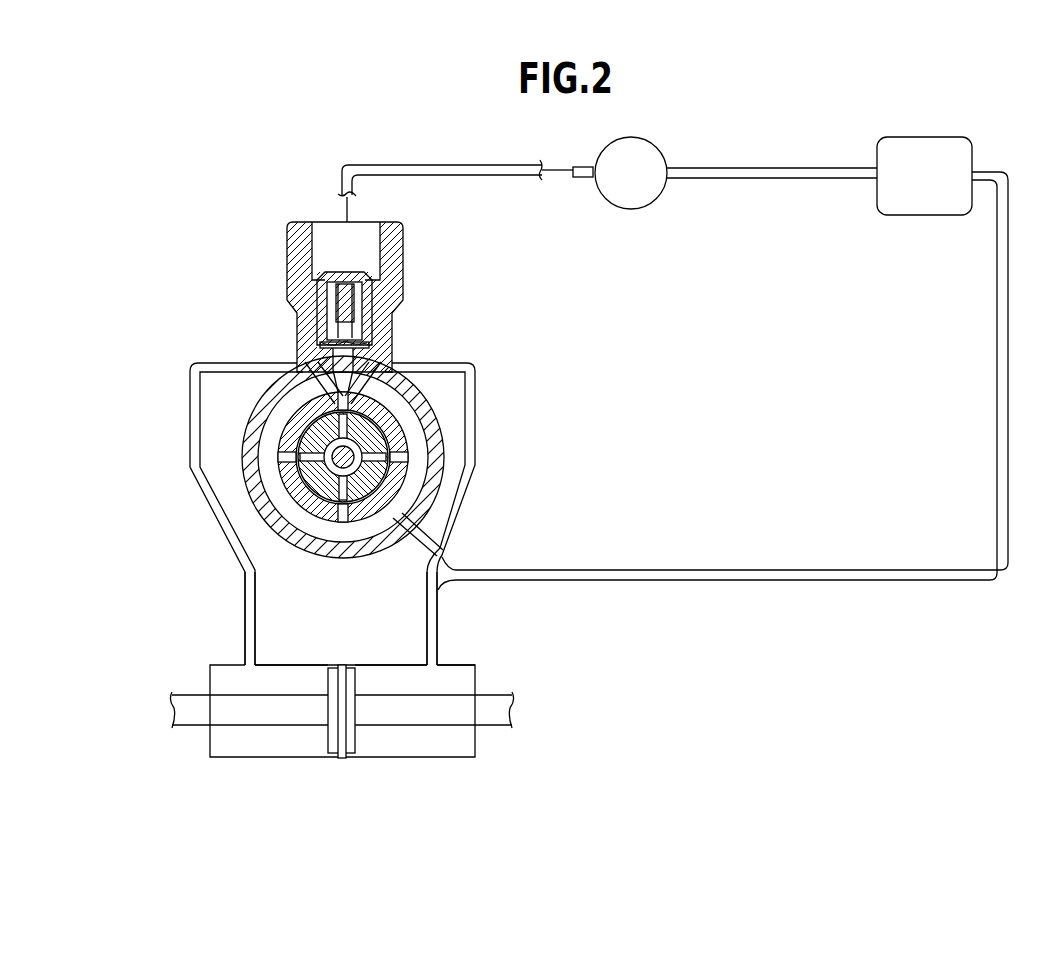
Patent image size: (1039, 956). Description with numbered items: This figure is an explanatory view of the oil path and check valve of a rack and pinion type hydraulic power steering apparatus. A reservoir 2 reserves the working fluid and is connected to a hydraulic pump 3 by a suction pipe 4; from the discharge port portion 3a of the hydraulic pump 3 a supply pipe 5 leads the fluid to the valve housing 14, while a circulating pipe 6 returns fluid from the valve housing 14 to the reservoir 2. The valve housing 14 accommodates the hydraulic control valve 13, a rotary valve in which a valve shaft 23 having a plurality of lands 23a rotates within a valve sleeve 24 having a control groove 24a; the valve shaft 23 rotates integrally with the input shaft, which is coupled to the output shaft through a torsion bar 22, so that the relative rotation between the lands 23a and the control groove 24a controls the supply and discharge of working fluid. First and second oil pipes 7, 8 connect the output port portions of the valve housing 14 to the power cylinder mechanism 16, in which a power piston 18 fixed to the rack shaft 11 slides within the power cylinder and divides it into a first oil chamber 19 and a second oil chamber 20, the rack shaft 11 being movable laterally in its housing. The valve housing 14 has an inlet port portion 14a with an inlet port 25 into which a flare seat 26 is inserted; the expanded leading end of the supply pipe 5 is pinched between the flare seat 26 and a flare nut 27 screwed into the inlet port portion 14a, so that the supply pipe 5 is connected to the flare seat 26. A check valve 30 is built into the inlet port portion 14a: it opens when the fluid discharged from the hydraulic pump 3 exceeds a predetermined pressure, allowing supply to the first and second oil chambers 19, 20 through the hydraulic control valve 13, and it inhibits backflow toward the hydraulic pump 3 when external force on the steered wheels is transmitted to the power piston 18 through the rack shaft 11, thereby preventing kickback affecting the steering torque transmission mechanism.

The reservoir 2 is at (921, 215).
The hydraulic pump 3 is at (631, 210).
The discharge port portion 3a is at (583, 180).
The suction pipe 4 is at (767, 168).
The supply pipe 5 is at (432, 165).
The circulating pipe 6 is at (845, 580).
The first oil pipe 7 is at (245, 600).
The second oil pipe 8 is at (427, 582).
The rack shaft 11 is at (492, 700).
The hydraulic control valve 13 is at (415, 443).
The valve housing 14 is at (252, 407).
The inlet port portion 14a is at (297, 262).
The power cylinder mechanism 16 is at (211, 671).
The power piston 18 is at (345, 680).
The first oil chamber 19 is at (290, 665).
The second oil chamber 20 is at (393, 665).
The torsion bar 22 is at (350, 458).
The valve shaft 23 is at (292, 495).
The lands 23a is at (366, 422).
The valve sleeve 24 is at (285, 445).
The control groove 24a is at (368, 372).
The inlet port 25 is at (365, 250).
The flare seat 26 is at (376, 288).
The flare nut 27 is at (462, 665).
The check valve 30 is at (320, 328).